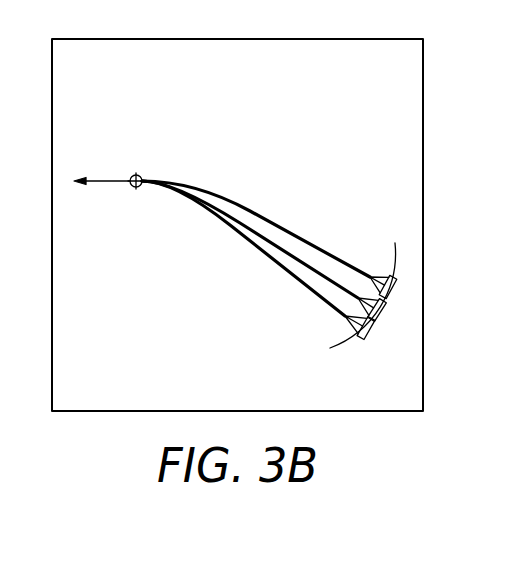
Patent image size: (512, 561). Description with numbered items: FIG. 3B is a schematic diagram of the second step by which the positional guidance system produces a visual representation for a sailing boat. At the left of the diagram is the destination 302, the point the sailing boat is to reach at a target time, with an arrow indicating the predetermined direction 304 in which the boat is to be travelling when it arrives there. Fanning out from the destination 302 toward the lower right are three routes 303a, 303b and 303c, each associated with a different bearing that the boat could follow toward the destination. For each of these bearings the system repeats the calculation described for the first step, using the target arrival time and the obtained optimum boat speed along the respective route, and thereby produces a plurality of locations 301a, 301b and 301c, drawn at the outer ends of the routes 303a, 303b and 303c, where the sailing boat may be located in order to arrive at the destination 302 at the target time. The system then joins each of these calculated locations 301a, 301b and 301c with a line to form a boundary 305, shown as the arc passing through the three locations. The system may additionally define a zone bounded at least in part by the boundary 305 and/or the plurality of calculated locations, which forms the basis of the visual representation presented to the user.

The location 301a is at (398, 288).
The location 301b is at (388, 318).
The location 301c is at (366, 342).
The destination 302 is at (130, 176).
The route 303a is at (251, 209).
The route 303b is at (272, 230).
The route 303c is at (293, 257).
The predetermined direction 304 is at (78, 188).
The boundary 305 is at (330, 341).